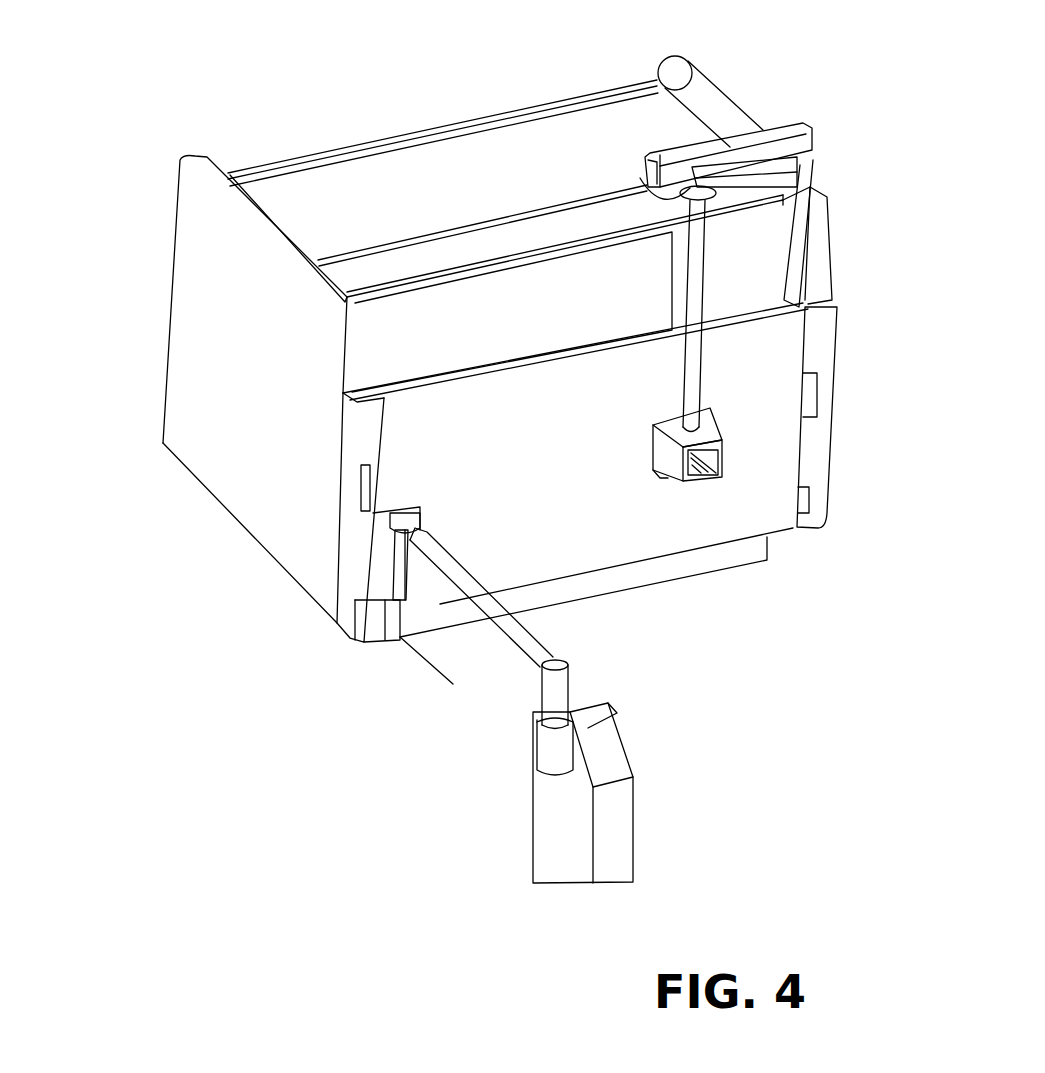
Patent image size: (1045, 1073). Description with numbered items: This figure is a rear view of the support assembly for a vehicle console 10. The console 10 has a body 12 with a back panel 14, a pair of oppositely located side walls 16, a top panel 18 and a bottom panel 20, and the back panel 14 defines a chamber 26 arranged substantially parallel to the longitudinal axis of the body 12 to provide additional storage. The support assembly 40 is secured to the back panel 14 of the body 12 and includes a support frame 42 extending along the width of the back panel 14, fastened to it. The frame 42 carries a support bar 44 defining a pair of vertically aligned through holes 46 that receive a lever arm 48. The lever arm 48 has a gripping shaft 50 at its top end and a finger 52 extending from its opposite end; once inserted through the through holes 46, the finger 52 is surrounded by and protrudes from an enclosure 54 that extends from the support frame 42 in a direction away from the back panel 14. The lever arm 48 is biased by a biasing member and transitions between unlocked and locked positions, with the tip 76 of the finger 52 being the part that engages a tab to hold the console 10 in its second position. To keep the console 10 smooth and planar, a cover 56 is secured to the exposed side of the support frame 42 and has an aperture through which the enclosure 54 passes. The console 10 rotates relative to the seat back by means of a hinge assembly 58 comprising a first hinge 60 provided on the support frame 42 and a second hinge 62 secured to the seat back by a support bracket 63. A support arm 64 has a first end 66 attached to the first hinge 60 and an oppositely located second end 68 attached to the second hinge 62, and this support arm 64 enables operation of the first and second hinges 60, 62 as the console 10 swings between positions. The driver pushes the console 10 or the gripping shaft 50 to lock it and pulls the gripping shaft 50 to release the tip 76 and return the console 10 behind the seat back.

The console 10 is at (115, 122).
The body 12 is at (156, 293).
The back panel 14 is at (817, 240).
The side walls 16 is at (185, 377).
The top panel 18 is at (262, 173).
The bottom panel 20 is at (672, 584).
The chamber 26 is at (357, 277).
The support assembly 40 is at (805, 553).
The support frame 42 is at (790, 296).
The support bar 44 is at (650, 187).
The through holes 46 is at (681, 130).
The lever arm 48 is at (688, 350).
The gripping shaft 50 is at (783, 183).
The finger 52 is at (708, 477).
The enclosure 54 is at (710, 432).
The cover 56 is at (585, 548).
The hinge assembly 58 is at (400, 712).
The first hinge 60 is at (400, 553).
The second hinge 62 is at (548, 762).
The support bracket 63 is at (618, 820).
The support arm 64 is at (470, 683).
The first end 66 is at (385, 613).
The second end 68 is at (557, 690).
The tip 76 is at (690, 480).